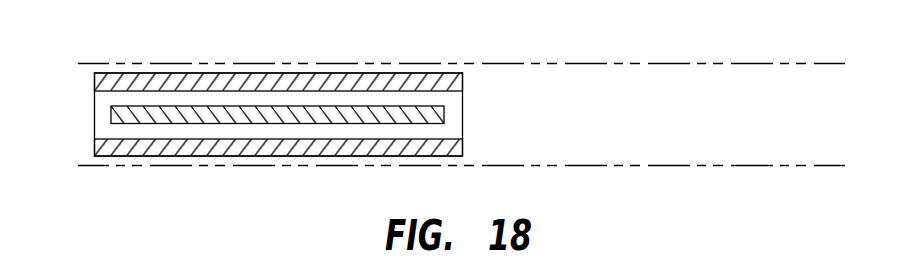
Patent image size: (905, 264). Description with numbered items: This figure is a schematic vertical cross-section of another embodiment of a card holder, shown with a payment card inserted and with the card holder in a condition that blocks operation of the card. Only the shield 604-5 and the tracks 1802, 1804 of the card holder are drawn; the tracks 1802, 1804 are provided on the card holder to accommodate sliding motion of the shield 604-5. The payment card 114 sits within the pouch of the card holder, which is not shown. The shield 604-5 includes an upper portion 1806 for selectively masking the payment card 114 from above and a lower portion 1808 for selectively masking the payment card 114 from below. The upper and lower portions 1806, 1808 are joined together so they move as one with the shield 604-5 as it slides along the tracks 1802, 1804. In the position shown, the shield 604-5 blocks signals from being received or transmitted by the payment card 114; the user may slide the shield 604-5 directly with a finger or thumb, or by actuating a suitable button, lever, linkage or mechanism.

The shield 604-5 is at (72, 100).
The upper portion 1806 is at (206, 73).
The payment card 114 is at (345, 104).
The lower portion 1808 is at (205, 156).
The track 1802 is at (660, 63).
The track 1804 is at (656, 166).